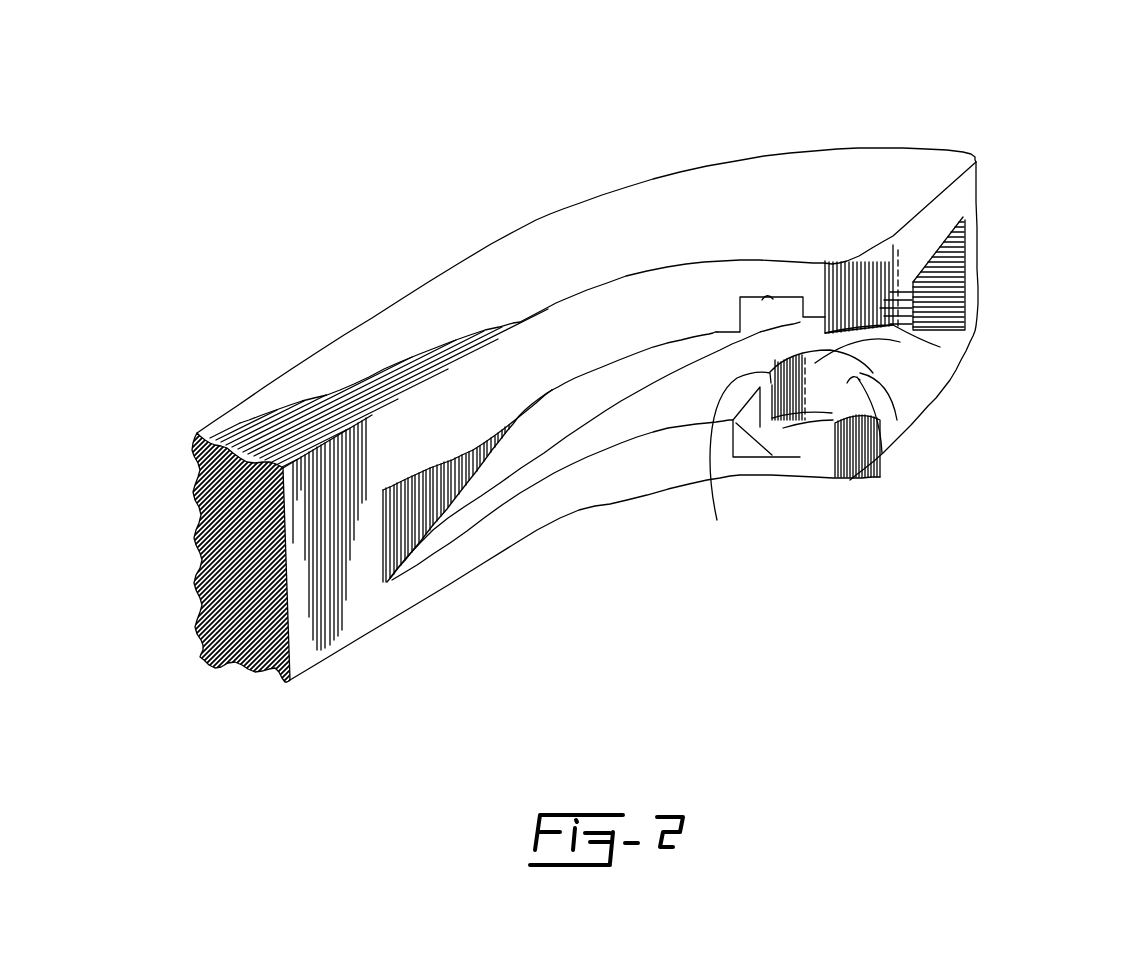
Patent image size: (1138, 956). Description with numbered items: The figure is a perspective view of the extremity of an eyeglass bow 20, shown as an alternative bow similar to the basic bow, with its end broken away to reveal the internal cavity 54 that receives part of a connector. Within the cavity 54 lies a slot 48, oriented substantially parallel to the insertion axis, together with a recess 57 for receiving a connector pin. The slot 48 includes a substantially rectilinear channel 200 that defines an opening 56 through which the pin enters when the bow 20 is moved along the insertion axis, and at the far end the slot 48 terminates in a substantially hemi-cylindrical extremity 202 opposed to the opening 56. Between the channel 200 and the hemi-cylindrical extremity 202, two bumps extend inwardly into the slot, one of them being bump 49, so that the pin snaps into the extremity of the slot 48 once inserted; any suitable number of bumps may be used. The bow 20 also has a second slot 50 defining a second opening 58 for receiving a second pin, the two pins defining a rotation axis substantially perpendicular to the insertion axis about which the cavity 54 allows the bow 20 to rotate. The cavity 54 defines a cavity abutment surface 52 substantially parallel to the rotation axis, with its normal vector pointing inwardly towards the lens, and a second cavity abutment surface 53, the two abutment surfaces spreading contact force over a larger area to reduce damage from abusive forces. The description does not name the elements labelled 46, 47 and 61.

The bow 20 is at (350, 318).
The cage body 46 is at (526, 224).
The roller 47 is at (873, 413).
The slot 48 is at (898, 397).
The bump 49 is at (717, 520).
The second slot 50 is at (772, 298).
The cavity abutment surface 52 is at (907, 360).
The second cavity abutment surface 53 is at (930, 277).
The cavity 54 is at (487, 470).
The opening 56 is at (747, 430).
The recess 57 is at (793, 433).
The second opening 58 is at (763, 300).
The top surface 61 is at (897, 183).
The channel 200 is at (780, 457).
The hemi-cylindrical extremity 202 is at (897, 330).